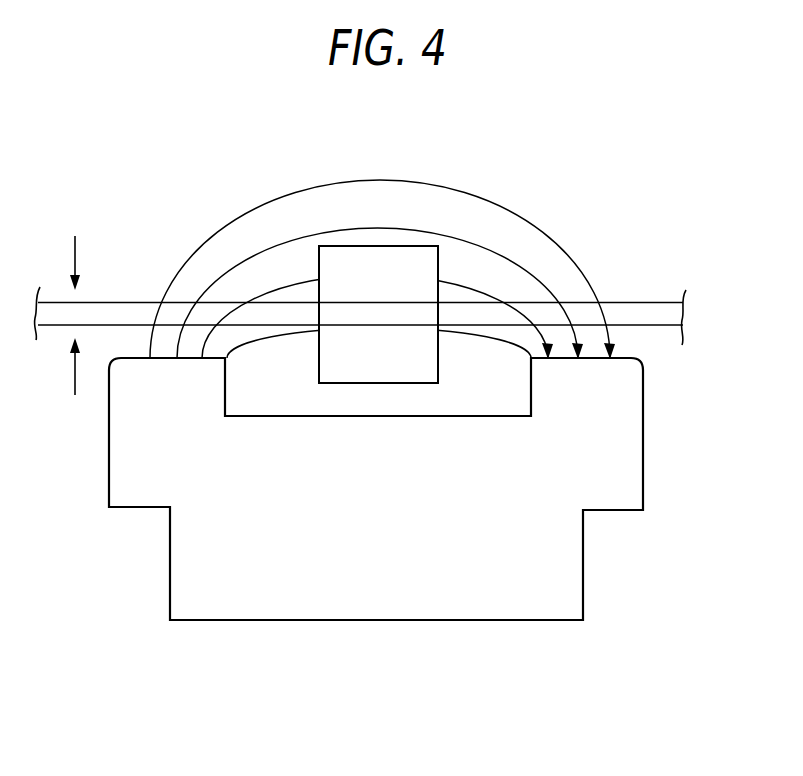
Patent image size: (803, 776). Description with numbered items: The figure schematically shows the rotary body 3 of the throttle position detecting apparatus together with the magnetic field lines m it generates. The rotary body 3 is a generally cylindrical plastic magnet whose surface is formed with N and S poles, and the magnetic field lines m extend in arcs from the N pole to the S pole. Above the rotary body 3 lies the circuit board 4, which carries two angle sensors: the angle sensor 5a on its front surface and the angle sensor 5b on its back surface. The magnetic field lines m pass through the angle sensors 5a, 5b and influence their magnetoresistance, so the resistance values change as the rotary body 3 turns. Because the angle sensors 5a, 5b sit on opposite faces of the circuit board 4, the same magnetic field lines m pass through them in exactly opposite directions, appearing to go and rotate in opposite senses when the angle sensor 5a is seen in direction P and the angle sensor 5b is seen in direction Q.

The rotary body 3 is at (180, 580).
The circuit board 4 is at (631, 311).
The angle sensor 5a is at (327, 267).
The angle sensor 5b is at (320, 363).
The magnetic field lines m is at (542, 229).
The direction P is at (74, 250).
The direction Q is at (76, 380).